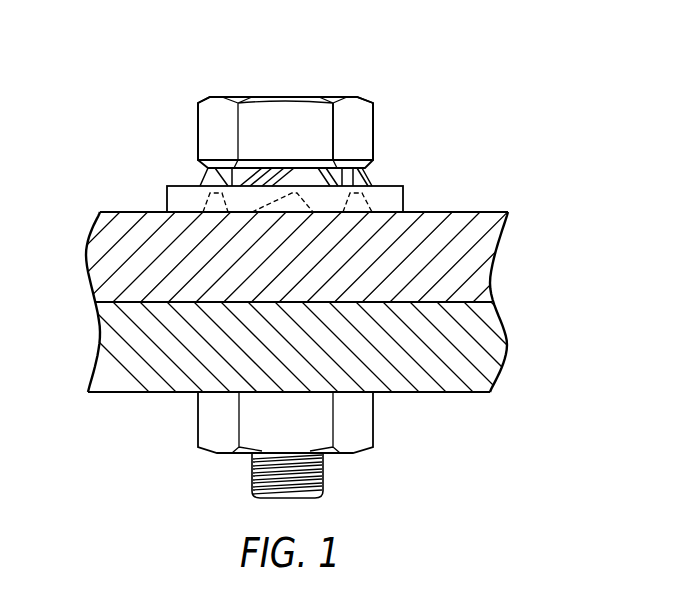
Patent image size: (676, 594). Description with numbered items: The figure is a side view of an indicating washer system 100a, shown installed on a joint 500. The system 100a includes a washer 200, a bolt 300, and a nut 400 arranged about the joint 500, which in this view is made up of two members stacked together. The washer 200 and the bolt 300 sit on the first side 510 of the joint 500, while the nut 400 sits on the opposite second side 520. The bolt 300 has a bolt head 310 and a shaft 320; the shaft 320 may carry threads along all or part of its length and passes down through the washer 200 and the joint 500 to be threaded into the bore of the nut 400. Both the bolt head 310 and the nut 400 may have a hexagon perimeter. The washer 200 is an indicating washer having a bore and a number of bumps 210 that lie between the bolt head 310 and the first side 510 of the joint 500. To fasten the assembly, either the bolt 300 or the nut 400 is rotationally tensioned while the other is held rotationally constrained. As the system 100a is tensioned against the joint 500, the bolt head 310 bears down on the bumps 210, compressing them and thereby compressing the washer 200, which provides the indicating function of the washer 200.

The system 100a is at (122, 110).
The bolt 300 is at (288, 97).
The bolt head 310 is at (373, 120).
The bumps 210 is at (372, 178).
The washer 200 is at (405, 187).
The joint 500 is at (512, 297).
The first side 510 is at (480, 212).
The second side 520 is at (467, 392).
The nut 400 is at (378, 452).
The shaft 320 is at (322, 480).